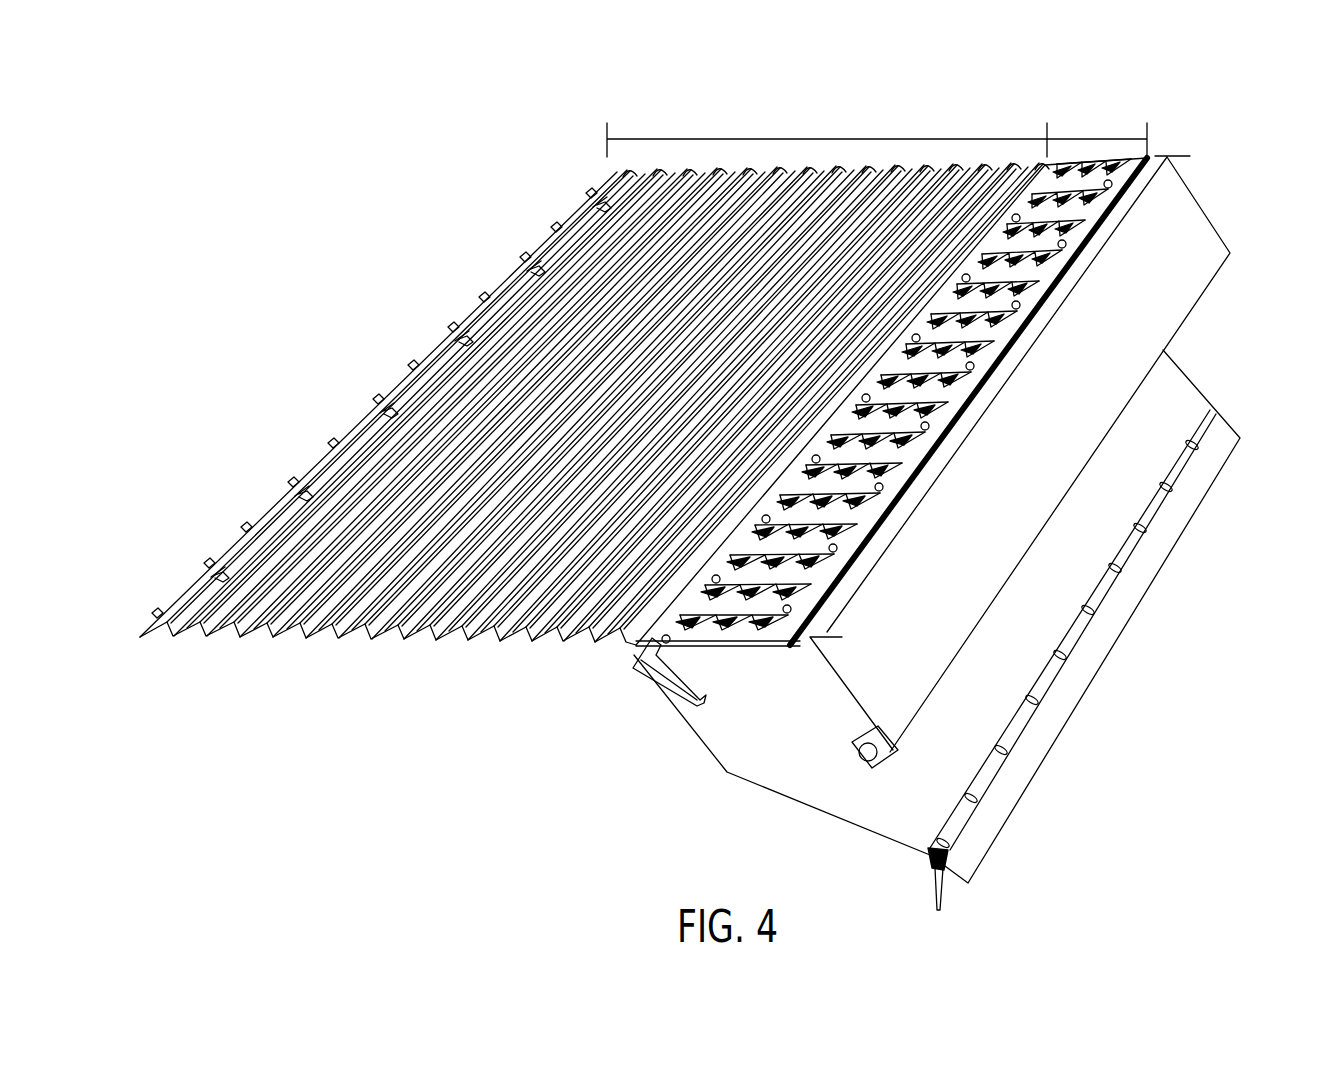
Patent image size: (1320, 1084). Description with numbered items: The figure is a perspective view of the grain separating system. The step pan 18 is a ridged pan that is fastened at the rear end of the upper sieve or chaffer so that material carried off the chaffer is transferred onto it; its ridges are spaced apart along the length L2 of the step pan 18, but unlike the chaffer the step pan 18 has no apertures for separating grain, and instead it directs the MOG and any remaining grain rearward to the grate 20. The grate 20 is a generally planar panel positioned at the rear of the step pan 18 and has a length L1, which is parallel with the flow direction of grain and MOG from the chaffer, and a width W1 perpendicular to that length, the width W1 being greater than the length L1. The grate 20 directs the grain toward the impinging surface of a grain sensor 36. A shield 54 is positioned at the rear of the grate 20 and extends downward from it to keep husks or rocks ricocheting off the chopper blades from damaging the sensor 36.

The step pan 18 is at (442, 684).
The grate 20 is at (795, 680).
The grain sensor 36 is at (687, 673).
The shield 54 is at (1192, 220).
The width of the grate W1 is at (1100, 264).
The length of the grate L1 is at (1090, 138).
The length of the step pan L2 is at (830, 138).